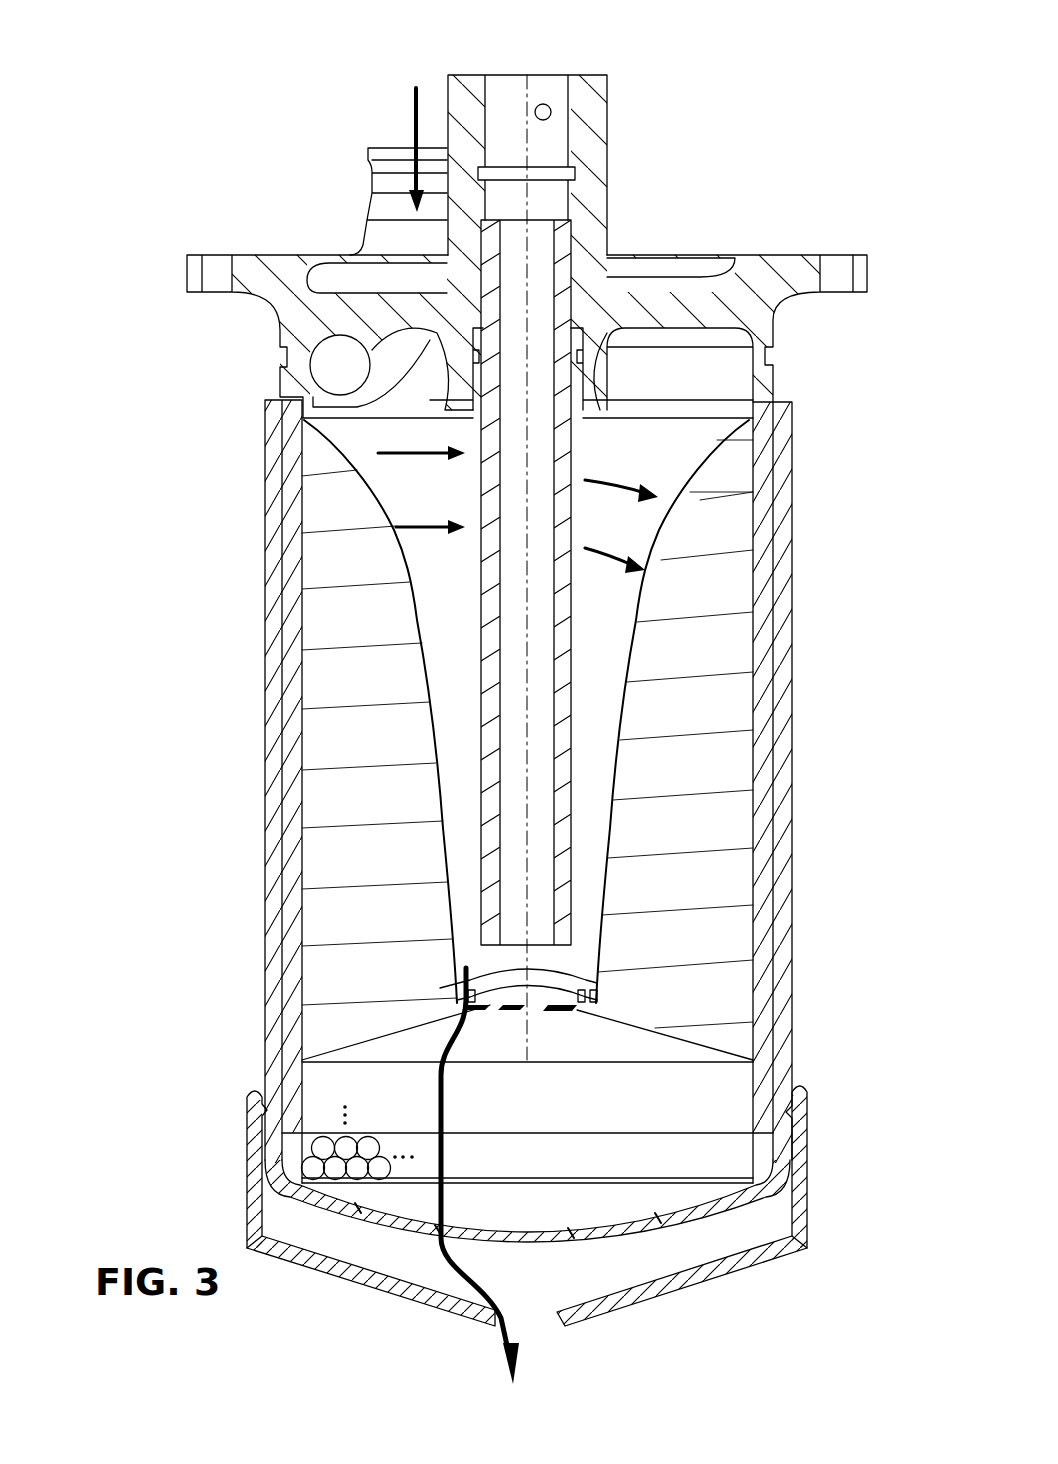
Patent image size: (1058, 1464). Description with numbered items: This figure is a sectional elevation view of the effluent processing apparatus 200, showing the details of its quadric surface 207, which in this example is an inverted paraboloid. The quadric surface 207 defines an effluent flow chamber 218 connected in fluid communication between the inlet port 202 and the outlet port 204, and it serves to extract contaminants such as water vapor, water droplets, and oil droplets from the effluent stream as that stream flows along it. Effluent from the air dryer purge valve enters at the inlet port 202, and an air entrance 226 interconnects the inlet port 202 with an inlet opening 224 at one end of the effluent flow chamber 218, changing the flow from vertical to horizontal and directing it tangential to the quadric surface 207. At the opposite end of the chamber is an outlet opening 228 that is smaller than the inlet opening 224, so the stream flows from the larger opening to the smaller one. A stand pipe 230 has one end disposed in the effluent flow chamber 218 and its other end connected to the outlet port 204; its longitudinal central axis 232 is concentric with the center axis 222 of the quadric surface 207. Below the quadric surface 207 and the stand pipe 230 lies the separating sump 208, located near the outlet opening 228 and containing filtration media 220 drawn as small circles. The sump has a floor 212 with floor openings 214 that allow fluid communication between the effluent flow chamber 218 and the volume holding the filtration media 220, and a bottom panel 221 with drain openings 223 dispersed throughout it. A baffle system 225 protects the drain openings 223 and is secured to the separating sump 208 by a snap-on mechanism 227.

The effluent processing apparatus 200 is at (248, 120).
The inlet port 202 is at (385, 124).
The outlet port 204 is at (531, 54).
The quadric surface 207 is at (407, 627).
The separating sump 208 is at (698, 1162).
The floor 212 is at (603, 1033).
The floor openings 214 is at (557, 1010).
The effluent flow chamber 218 is at (457, 672).
The filtration media 220 is at (345, 1140).
The bottom panel 221 is at (798, 1240).
The center axis 222 is at (527, 387).
The drain openings 223 is at (437, 1230).
The inlet opening 224 is at (650, 420).
The baffle system 225 is at (752, 1257).
The air entrance 226 is at (352, 360).
The snap-on mechanism 227 is at (808, 1103).
The outlet opening 228 is at (542, 950).
The stand pipe 230 is at (565, 497).
The longitudinal central axis 232 is at (527, 748).